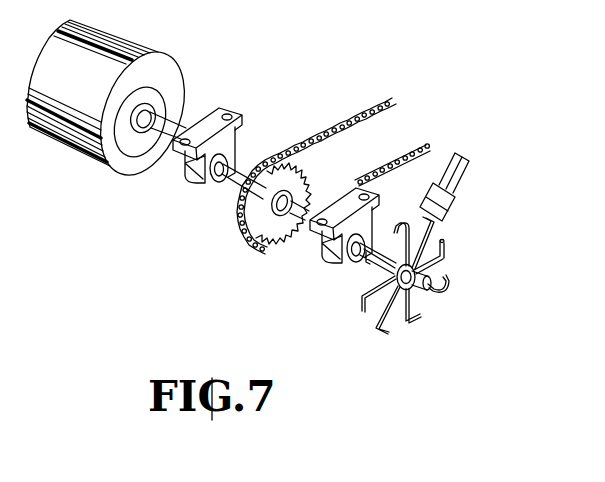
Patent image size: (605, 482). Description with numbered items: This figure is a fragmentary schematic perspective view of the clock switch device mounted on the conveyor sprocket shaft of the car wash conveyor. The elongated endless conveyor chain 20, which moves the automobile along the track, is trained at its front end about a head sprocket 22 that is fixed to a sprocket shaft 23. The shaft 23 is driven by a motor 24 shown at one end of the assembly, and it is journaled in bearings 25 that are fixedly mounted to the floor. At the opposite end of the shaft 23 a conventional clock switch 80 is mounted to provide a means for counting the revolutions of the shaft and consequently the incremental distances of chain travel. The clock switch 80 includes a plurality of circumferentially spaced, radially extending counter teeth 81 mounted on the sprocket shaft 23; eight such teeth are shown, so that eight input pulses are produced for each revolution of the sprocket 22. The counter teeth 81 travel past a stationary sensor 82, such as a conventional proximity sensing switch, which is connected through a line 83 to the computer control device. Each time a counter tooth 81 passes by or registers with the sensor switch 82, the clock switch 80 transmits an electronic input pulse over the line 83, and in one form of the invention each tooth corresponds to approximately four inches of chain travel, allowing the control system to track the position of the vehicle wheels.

The conveyor chain 20 is at (332, 130).
The head sprocket 22 is at (293, 188).
The sprocket shaft 23 is at (231, 184).
The motor 24 is at (88, 85).
The bearings 25 is at (206, 122).
The clock switch 80 is at (434, 297).
The counter teeth 81 is at (431, 224).
The sensor 82 is at (460, 172).
The line 83 is at (448, 155).